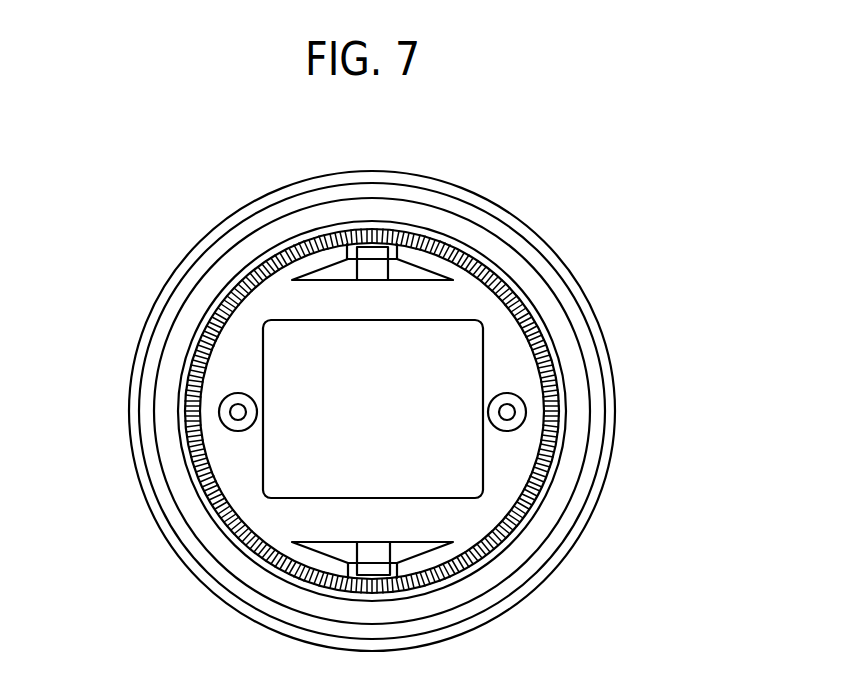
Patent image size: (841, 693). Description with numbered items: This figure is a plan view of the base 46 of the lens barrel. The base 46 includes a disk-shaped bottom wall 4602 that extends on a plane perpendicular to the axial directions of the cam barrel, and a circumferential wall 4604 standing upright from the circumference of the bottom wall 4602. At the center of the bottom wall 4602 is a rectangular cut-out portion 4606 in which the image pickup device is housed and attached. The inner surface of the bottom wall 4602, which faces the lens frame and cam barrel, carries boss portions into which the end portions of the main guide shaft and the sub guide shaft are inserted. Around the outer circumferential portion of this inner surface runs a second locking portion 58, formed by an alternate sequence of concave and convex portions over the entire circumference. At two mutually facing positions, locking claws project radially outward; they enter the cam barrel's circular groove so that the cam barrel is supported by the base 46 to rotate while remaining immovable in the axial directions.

The base 46 is at (470, 165).
The second locking portion 58 is at (490, 253).
The bottom wall 4602 is at (231, 470).
The circumferential wall 4604 is at (217, 597).
The cut-out portion 4606 is at (480, 364).